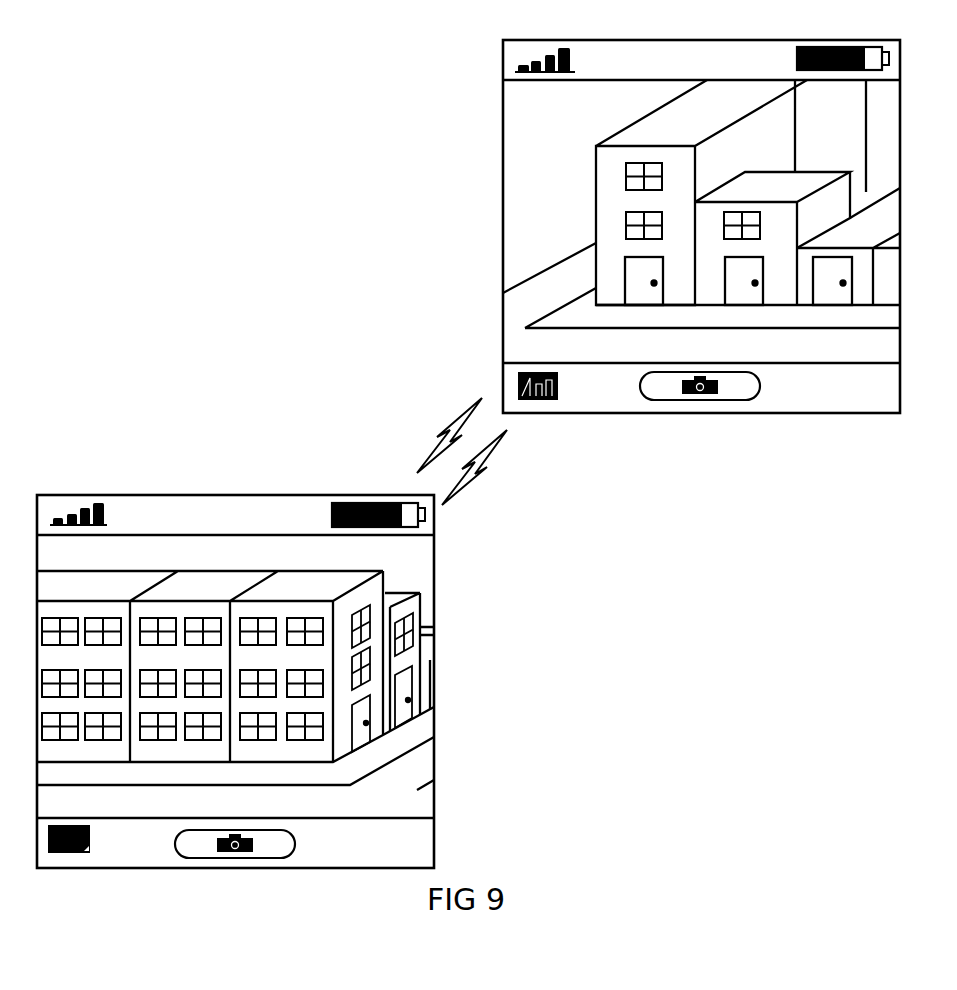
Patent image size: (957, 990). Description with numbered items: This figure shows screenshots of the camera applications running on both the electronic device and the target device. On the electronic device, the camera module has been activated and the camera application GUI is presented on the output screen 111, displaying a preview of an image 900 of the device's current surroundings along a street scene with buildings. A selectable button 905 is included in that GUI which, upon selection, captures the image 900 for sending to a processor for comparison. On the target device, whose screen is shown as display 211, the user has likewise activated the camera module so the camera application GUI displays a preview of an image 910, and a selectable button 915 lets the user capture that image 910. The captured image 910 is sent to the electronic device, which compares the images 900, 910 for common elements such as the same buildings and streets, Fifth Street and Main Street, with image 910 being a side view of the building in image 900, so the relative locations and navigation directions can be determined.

The image 900 is at (547, 145).
The output screen 111 is at (500, 263).
The second mobile device 211 is at (137, 495).
The selectable button 905 is at (652, 395).
The image 910 is at (410, 568).
The selectable button 915 is at (297, 843).